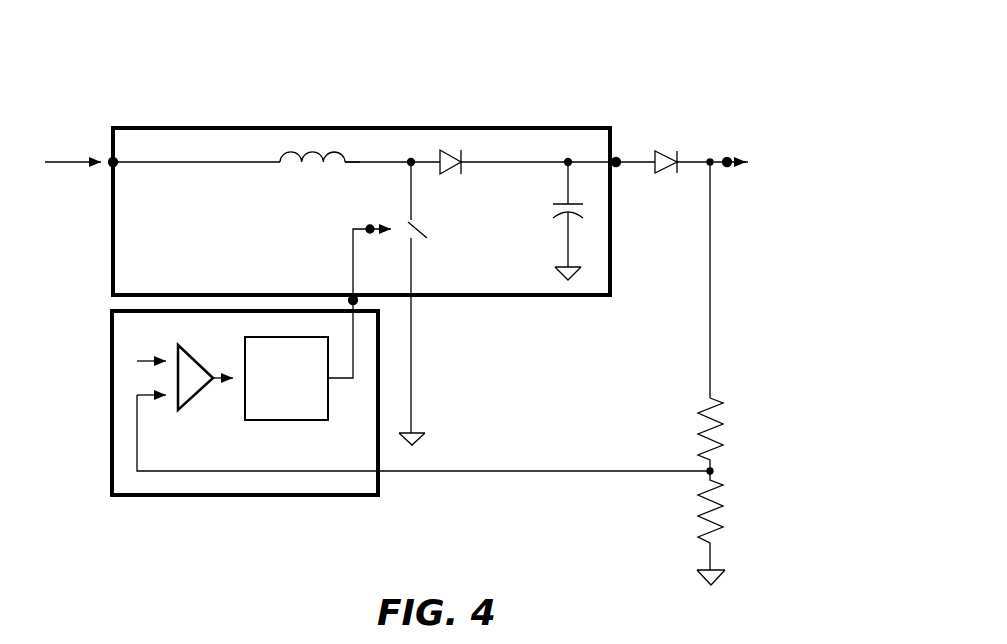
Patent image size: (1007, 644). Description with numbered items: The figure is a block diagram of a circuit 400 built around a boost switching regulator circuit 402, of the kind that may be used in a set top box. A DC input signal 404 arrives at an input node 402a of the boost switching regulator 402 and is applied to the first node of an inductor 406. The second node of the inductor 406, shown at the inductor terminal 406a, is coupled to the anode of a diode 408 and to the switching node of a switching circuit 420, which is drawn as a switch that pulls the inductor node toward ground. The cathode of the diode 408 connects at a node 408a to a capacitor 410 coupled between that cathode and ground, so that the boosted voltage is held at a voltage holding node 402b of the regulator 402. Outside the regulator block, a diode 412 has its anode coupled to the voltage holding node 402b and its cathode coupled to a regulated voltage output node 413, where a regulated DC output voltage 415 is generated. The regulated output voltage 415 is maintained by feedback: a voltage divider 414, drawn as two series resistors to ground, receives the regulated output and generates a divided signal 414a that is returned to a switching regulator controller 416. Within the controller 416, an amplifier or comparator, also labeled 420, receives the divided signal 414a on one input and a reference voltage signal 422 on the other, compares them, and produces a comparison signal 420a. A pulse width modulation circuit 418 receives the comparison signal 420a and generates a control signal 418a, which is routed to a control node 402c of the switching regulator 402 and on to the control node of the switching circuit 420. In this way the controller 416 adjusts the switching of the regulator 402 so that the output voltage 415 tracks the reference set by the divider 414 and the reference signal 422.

The circuit 400 is at (706, 51).
The boost switching regulator circuit 402 is at (515, 128).
The input node 402a is at (112, 155).
The voltage holding node 402b is at (618, 158).
The control node 402c is at (352, 297).
The DC input signal 404 is at (63, 165).
The inductor 406 is at (317, 165).
The inductor output terminal 406a is at (350, 167).
The diode 408 is at (430, 160).
The diode output node 408a is at (488, 162).
The capacitor 410 is at (557, 215).
The diode 412 is at (665, 177).
The regulated voltage output node 413 is at (728, 158).
The voltage divider 414 is at (715, 417).
The divided signal 414a is at (518, 470).
The regulated DC output voltage 415 is at (757, 170).
The switching regulator controller 416 is at (228, 497).
The pulse width modulation circuit 418 is at (286, 378).
The control signal 418a is at (352, 252).
The switching circuit 420 is at (426, 228).
The comparison signal 420a is at (220, 380).
The reference voltage signal 422 is at (151, 363).